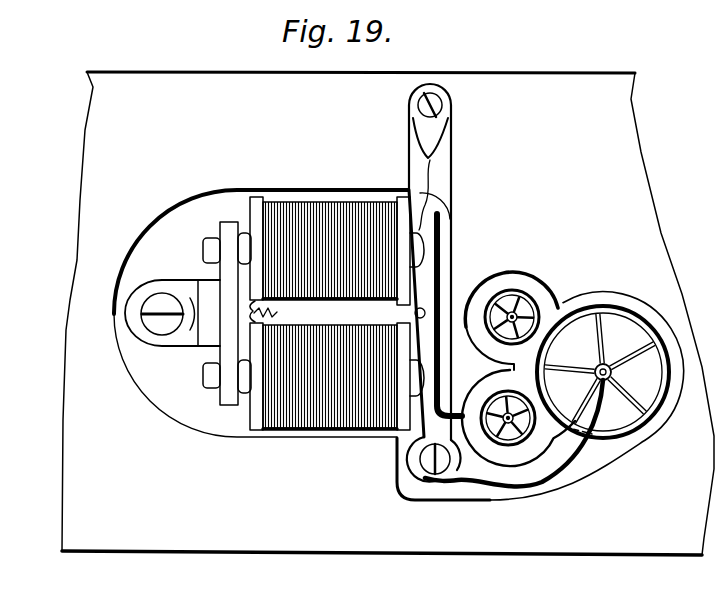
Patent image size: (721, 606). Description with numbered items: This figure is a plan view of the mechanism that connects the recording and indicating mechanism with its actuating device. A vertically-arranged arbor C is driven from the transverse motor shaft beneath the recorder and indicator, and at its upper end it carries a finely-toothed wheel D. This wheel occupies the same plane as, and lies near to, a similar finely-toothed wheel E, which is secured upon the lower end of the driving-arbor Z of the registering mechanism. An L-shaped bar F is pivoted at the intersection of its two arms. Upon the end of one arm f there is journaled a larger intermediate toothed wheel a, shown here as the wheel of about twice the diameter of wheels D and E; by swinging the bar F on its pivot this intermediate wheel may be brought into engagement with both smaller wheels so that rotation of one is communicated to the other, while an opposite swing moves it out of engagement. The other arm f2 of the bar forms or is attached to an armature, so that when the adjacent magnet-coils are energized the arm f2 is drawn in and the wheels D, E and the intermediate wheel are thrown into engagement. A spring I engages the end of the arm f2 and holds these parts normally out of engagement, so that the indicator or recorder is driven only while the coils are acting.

The finely-toothed wheel E is at (297, 212).
The spring I is at (427, 181).
The arm of L-shaped bar (armature arm) f2 is at (437, 266).
The finely-toothed wheel D is at (533, 292).
The vertically-arranged arbor C is at (501, 311).
The driving-arbor Z is at (501, 408).
The large spoked wheel a is at (633, 427).
The arm of L-shaped bar f is at (573, 452).
The L-shaped bar F is at (470, 471).